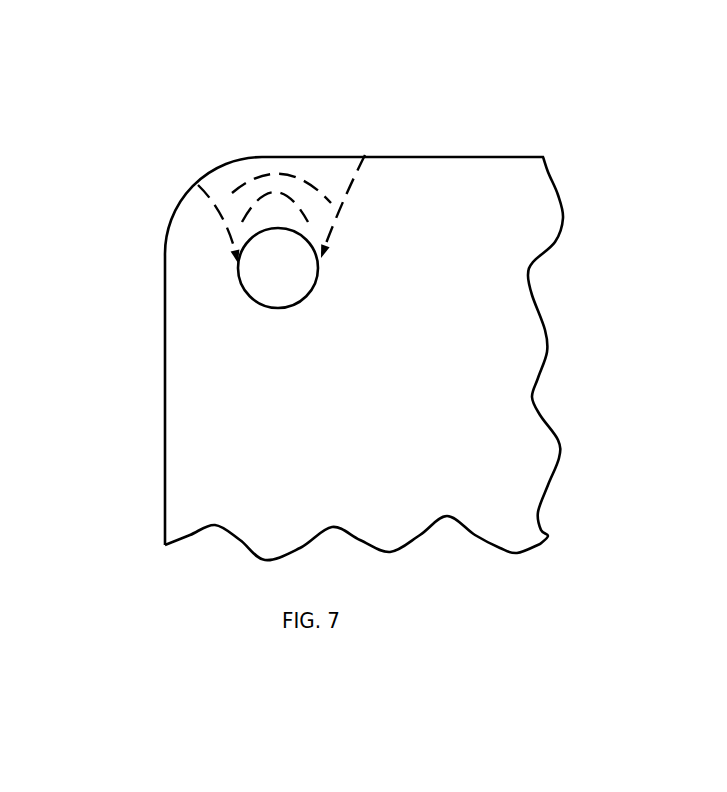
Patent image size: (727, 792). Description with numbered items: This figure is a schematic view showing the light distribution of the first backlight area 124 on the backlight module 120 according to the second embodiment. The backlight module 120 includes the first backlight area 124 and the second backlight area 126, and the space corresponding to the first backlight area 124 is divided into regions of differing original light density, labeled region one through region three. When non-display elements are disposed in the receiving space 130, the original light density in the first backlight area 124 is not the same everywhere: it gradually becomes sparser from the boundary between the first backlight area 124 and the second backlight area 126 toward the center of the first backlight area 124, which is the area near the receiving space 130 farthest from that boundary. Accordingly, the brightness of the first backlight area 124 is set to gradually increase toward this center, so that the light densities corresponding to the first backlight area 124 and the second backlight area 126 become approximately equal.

The backlight module 120 is at (452, 72).
The first backlight area 124 is at (267, 188).
The second backlight area 126 is at (427, 228).
The receiving space 130 is at (268, 270).